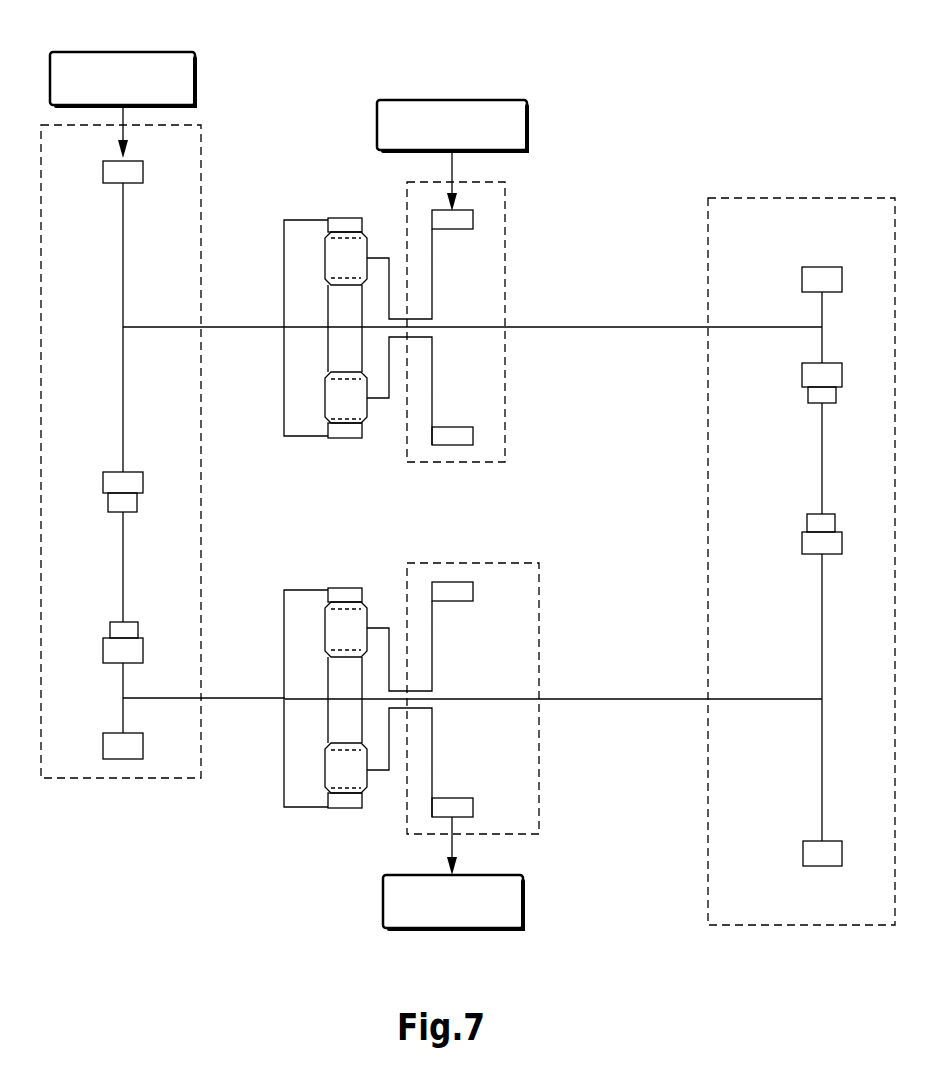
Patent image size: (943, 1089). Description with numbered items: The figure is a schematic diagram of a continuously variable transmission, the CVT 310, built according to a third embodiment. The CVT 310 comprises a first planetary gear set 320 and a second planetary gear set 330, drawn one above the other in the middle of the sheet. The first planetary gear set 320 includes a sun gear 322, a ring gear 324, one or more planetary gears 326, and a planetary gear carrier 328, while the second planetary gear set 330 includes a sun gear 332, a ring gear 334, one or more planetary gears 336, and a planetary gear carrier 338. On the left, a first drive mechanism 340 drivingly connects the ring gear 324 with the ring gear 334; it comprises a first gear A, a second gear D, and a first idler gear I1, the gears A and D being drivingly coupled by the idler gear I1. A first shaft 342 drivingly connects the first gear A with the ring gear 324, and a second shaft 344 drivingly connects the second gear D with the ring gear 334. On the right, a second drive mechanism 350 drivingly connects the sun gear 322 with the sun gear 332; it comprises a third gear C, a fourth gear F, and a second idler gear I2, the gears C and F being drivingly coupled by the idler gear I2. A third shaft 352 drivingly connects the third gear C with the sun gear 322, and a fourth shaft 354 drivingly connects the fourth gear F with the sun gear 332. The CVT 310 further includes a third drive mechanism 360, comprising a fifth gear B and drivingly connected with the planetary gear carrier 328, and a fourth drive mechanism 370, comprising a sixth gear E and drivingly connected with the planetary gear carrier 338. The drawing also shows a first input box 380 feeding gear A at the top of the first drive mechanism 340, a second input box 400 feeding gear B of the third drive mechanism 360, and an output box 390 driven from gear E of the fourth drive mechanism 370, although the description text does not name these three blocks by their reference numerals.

The CVT 310 is at (487, 43).
The first planetary gear set 320 is at (327, 170).
The sun gear 322 is at (337, 341).
The ring gear 324 is at (344, 220).
The planetary gears 326 is at (332, 398).
The planetary gear carrier 328 is at (380, 398).
The second planetary gear set 330 is at (262, 784).
The sun gear 332 is at (332, 778).
The ring gear 334 is at (343, 807).
The planetary gears 336 is at (330, 710).
The planetary gear carrier 338 is at (386, 628).
The first drive mechanism 340 is at (201, 137).
The first shaft 342 is at (185, 327).
The second shaft 344 is at (172, 698).
The second drive mechanism 350 is at (817, 195).
The third shaft 352 is at (588, 325).
The fourth shaft 354 is at (598, 699).
The third drive mechanism 360 is at (496, 322).
The fourth drive mechanism 370 is at (506, 698).
The input 1 380 is at (164, 52).
The output 390 is at (497, 928).
The input 2 400 is at (527, 128).
The first gear A is at (103, 170).
The fifth gear B is at (473, 222).
The third gear C is at (802, 280).
The second gear D is at (103, 741).
The sixth gear E is at (473, 807).
The fourth gear F is at (803, 852).
The first idler gear I1 is at (135, 628).
The second idler gear I2 is at (818, 525).